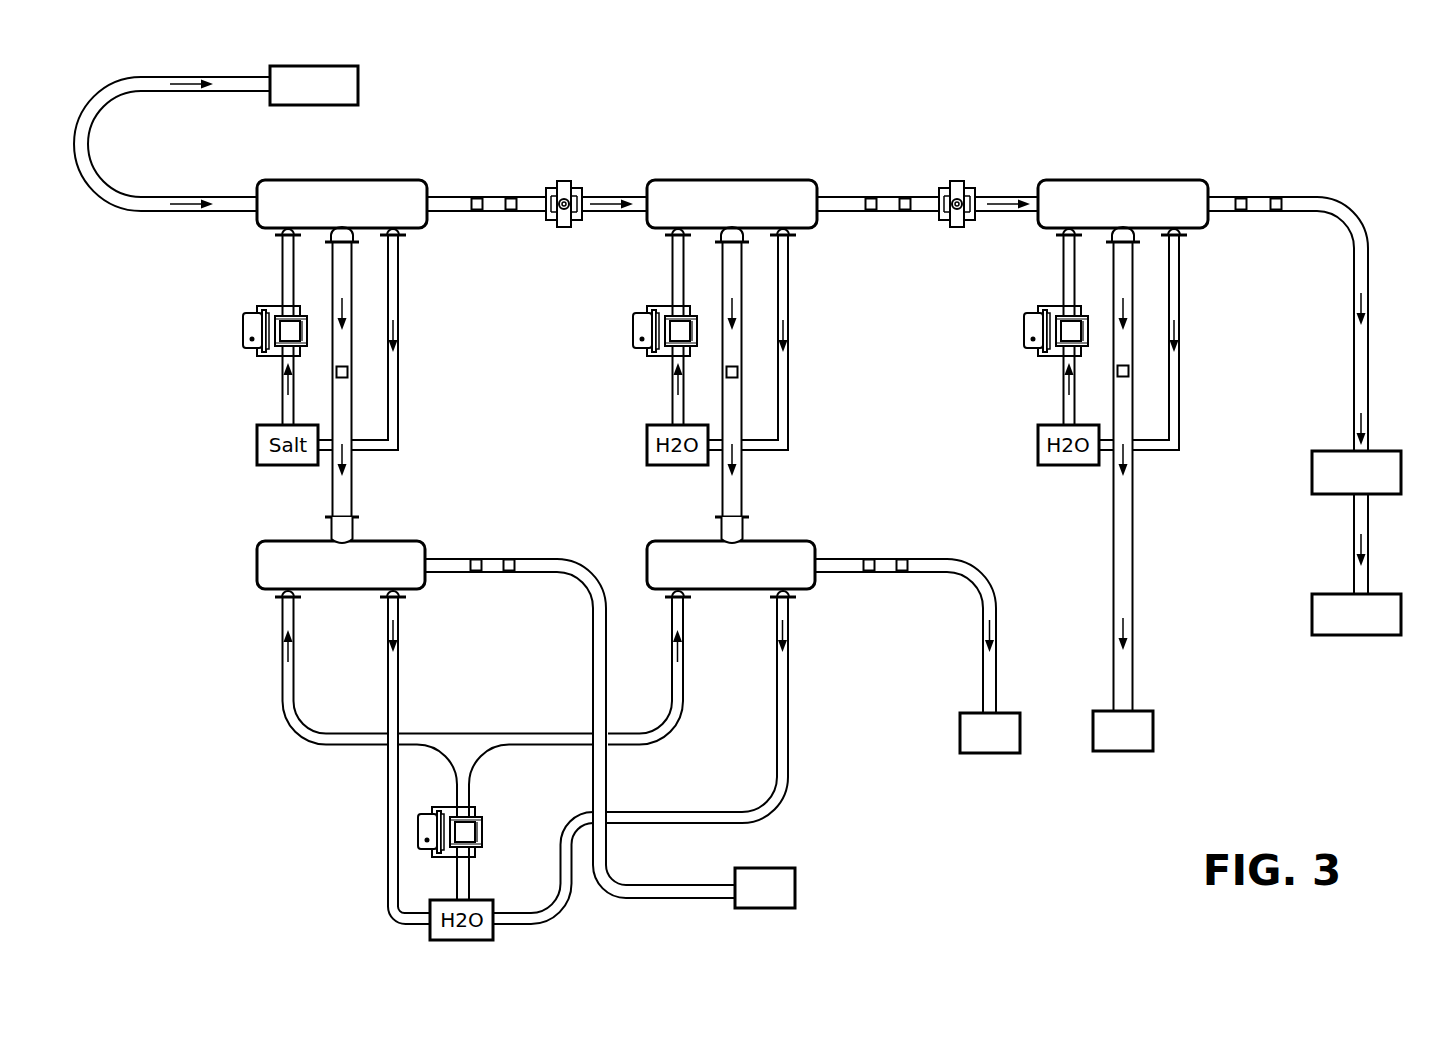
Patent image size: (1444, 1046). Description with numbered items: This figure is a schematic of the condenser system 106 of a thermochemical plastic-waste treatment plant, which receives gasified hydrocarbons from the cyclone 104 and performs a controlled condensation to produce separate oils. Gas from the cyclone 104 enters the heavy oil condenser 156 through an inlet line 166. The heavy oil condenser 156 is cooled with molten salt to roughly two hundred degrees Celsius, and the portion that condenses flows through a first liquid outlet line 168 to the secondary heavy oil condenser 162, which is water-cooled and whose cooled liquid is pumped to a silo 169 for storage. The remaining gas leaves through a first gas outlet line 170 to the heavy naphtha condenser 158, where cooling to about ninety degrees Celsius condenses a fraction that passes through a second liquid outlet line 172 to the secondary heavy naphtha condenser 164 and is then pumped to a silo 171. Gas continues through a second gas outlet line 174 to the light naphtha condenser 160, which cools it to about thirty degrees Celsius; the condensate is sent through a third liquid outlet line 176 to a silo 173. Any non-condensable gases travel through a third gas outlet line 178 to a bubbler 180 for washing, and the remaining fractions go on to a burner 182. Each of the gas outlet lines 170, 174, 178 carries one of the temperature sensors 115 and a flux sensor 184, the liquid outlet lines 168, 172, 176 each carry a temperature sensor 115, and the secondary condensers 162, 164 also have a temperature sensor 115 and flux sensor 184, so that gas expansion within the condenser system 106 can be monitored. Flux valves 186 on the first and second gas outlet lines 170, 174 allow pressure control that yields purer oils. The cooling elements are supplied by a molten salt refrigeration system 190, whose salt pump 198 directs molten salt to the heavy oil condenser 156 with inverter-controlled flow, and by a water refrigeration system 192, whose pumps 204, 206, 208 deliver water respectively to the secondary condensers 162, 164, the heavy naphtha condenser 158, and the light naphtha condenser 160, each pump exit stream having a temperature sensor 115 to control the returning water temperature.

The cyclone 104 is at (296, 102).
The condenser system 106 is at (1375, 105).
The temperature sensors 115 is at (477, 197).
The heavy oil condenser 156 is at (324, 221).
The heavy naphtha condenser 158 is at (714, 221).
The light naphtha condenser 160 is at (1105, 221).
The secondary heavy oil condenser 162 is at (323, 582).
The secondary heavy naphtha condenser 164 is at (713, 582).
The inlet line 166 is at (145, 212).
The first liquid outlet line 168 is at (355, 420).
The silo 169 is at (747, 899).
The first gas outlet line 170 is at (497, 193).
The silo 171 is at (972, 744).
The second liquid outlet line 172 is at (745, 420).
The silo 173 is at (1105, 742).
The second gas outlet line 174 is at (888, 193).
The third liquid outlet line 176 is at (1135, 420).
The third gas outlet line 178 is at (1263, 193).
The bubbler 180 is at (1339, 483).
The burner 182 is at (1339, 626).
The flux sensors 184 is at (511, 213).
The flux valves 186 is at (575, 186).
The molten salt refrigeration system 190 is at (168, 491).
The water refrigeration system 192 is at (877, 813).
The salt pump 198 is at (243, 335).
The pump 204 is at (482, 830).
The pump 206 is at (632, 335).
The pump 208 is at (1023, 335).